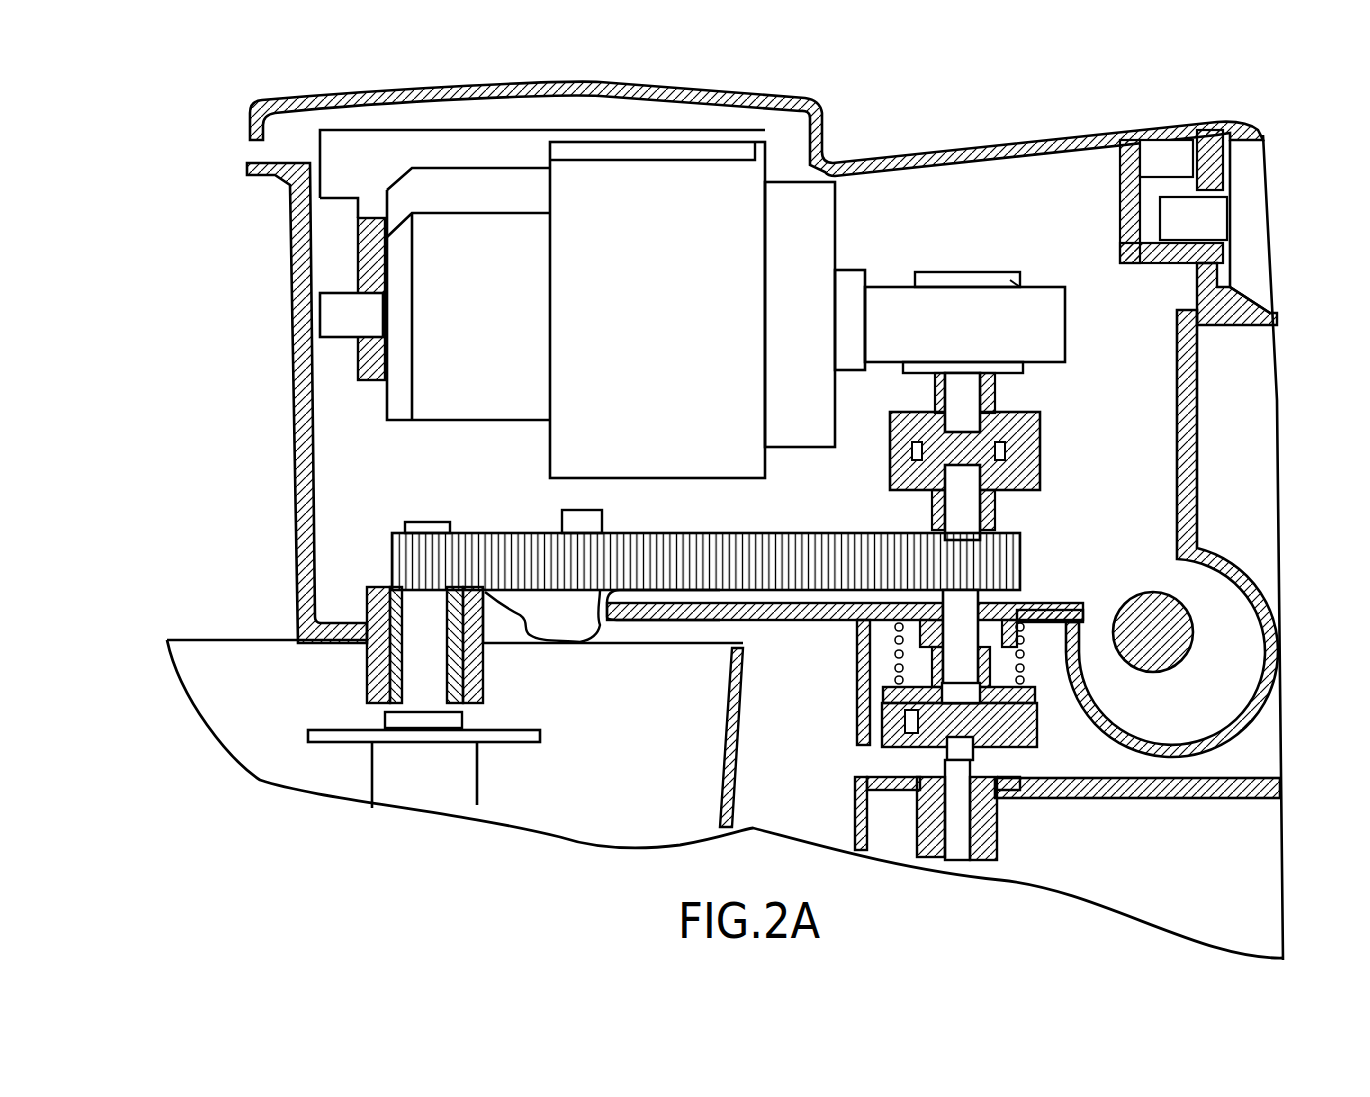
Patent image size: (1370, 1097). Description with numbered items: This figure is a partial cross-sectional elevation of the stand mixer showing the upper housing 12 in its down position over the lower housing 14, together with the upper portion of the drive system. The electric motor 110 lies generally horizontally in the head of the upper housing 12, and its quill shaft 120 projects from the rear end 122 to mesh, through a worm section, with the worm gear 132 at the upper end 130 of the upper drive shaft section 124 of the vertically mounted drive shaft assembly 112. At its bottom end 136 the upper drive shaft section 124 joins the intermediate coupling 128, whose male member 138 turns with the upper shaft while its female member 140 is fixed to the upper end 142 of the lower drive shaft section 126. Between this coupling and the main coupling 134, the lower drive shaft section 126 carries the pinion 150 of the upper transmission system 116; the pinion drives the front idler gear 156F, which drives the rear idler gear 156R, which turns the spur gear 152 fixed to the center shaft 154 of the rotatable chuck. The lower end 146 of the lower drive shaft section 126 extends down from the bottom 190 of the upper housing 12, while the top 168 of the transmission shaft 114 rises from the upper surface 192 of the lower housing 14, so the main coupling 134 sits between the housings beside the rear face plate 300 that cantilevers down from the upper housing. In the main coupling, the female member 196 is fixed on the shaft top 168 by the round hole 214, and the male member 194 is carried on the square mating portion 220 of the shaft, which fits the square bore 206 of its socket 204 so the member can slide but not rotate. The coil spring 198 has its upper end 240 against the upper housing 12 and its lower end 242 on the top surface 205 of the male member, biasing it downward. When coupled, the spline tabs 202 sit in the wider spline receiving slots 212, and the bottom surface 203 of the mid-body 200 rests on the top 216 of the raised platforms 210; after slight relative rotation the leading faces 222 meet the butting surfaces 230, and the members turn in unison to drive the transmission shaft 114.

The upper housing 12 is at (960, 142).
The lower housing 14 is at (1283, 853).
The electric motor 110 is at (680, 305).
The drive shaft assembly 112 is at (1030, 484).
The transmission shaft 114 is at (1000, 848).
The upper transmission system 116 is at (652, 543).
The quill shaft 120 is at (1065, 320).
The rear end 122 is at (838, 250).
The upper drive shaft section 124 is at (965, 393).
The lower drive shaft section 126 is at (983, 580).
The intermediate coupling 128 is at (1040, 437).
The upper end 130 is at (938, 272).
The worm gear 132 is at (1012, 281).
The main coupling 134 is at (1040, 726).
The bottom end 136 is at (968, 428).
The male member 138 is at (890, 432).
The female member 140 is at (895, 464).
The upper end 142 is at (960, 478).
The lower end 146 is at (940, 679).
The pinion 150 is at (1005, 585).
The spur gear 152 is at (397, 556).
The center shaft 154 is at (415, 677).
The rear idler gear 156R is at (512, 540).
The front idler gear 156F is at (760, 545).
The top of transmission shaft 168 is at (968, 762).
The bottom of upper housing 190 is at (785, 612).
The upper surface of lower housing 192 is at (1250, 778).
The male member 194 is at (1037, 709).
The female member 196 is at (1040, 749).
The spring 198 is at (1080, 640).
The mid-body 200 is at (887, 702).
The spline tabs 202 is at (933, 762).
The bottom surface 203 is at (902, 744).
The socket 204 is at (1025, 611).
The top surface 205 is at (900, 689).
The square bore 206 is at (1000, 669).
The raised platforms 210 is at (1037, 729).
The spline receiving slots 212 is at (913, 793).
The round hole 214 is at (1000, 820).
The top of raised platforms 216 is at (1035, 694).
The square mating portion 220 is at (940, 625).
The leading faces 222 is at (933, 755).
The butting surfaces 230 is at (910, 750).
The upper end of spring 240 is at (1022, 610).
The lower end of spring 242 is at (1040, 692).
The rear face plate 300 is at (865, 634).